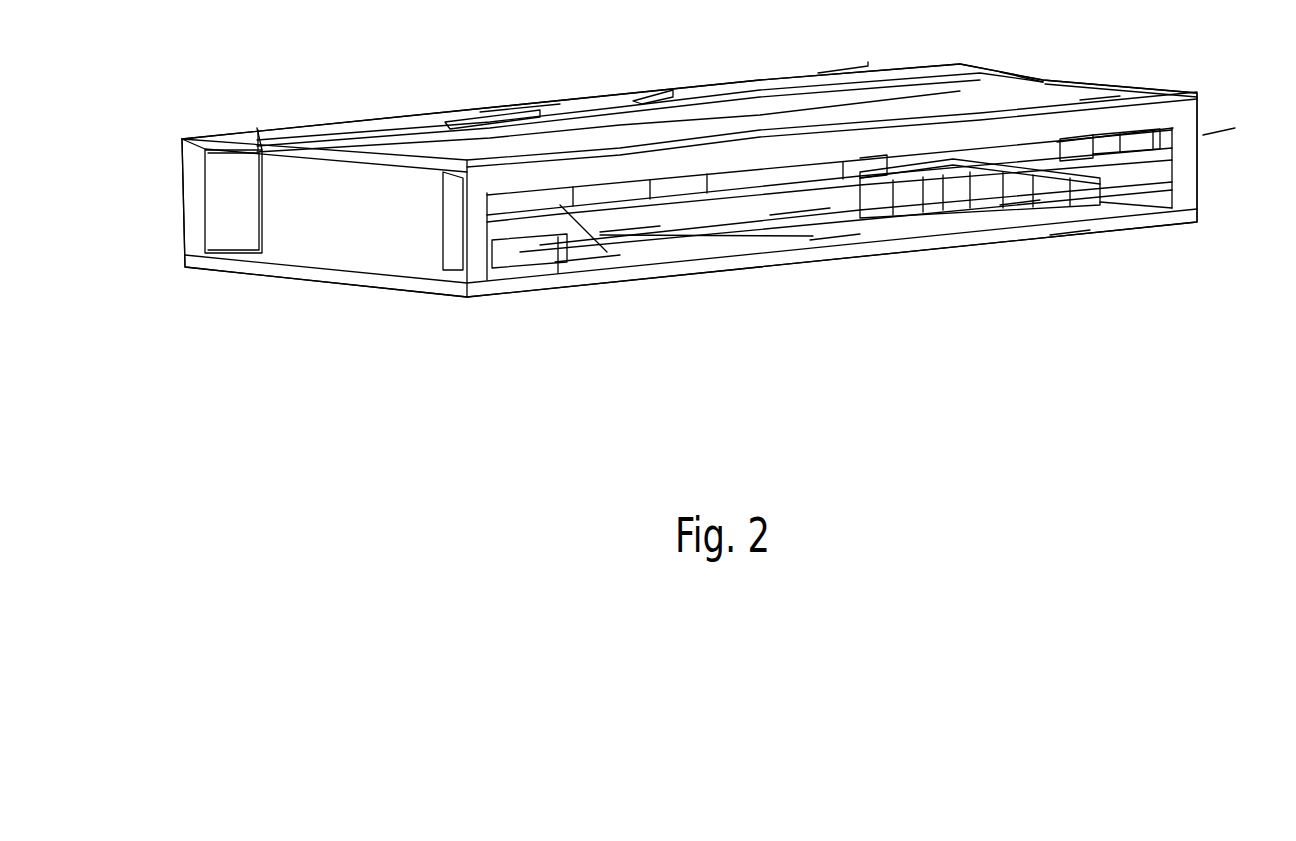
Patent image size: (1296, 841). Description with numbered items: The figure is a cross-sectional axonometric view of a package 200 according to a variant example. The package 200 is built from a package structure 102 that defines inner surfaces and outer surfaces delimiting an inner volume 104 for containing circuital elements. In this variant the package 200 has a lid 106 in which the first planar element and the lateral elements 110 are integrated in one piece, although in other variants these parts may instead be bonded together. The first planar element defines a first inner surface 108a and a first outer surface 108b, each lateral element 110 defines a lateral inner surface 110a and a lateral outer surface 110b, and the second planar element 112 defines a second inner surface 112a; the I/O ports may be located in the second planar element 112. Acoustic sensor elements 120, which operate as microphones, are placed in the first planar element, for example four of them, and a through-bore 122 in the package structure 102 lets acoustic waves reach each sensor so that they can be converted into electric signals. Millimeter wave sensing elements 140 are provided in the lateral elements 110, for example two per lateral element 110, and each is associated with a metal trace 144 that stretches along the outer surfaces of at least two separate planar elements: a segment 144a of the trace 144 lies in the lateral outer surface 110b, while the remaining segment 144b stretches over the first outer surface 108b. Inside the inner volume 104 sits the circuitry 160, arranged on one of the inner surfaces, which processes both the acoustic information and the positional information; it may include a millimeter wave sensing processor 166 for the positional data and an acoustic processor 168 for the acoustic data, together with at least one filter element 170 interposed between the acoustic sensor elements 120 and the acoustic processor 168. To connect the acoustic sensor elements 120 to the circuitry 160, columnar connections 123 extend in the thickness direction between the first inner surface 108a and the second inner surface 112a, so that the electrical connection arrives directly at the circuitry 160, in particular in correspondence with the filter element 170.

The package structure 102 is at (733, 180).
The inner volume 104 is at (817, 178).
The lid 106 is at (218, 138).
The first inner surface 108a is at (1048, 133).
The first outer surface 108b is at (640, 100).
The lateral element 110 is at (193, 232).
The lateral inner surface 110a is at (1147, 187).
The lateral outer surface 110b is at (195, 152).
The second planar element 112 is at (312, 276).
The second inner surface 112a is at (513, 277).
The acoustic sensor element 120 is at (633, 233).
The through-bore 122 is at (1118, 108).
The columnar connection 123 is at (607, 247).
The millimeter wave sensing element 140 is at (228, 196).
The metal trace 144 is at (480, 110).
The segment of the trace 144a is at (258, 143).
The remaining segment of the trace 144b is at (370, 133).
The circuitry 160 is at (550, 255).
The millimeter wave sensing processor 166 is at (653, 225).
The acoustic processor 168 is at (840, 240).
The filter element 170 is at (1017, 198).
The package 200 is at (433, 380).